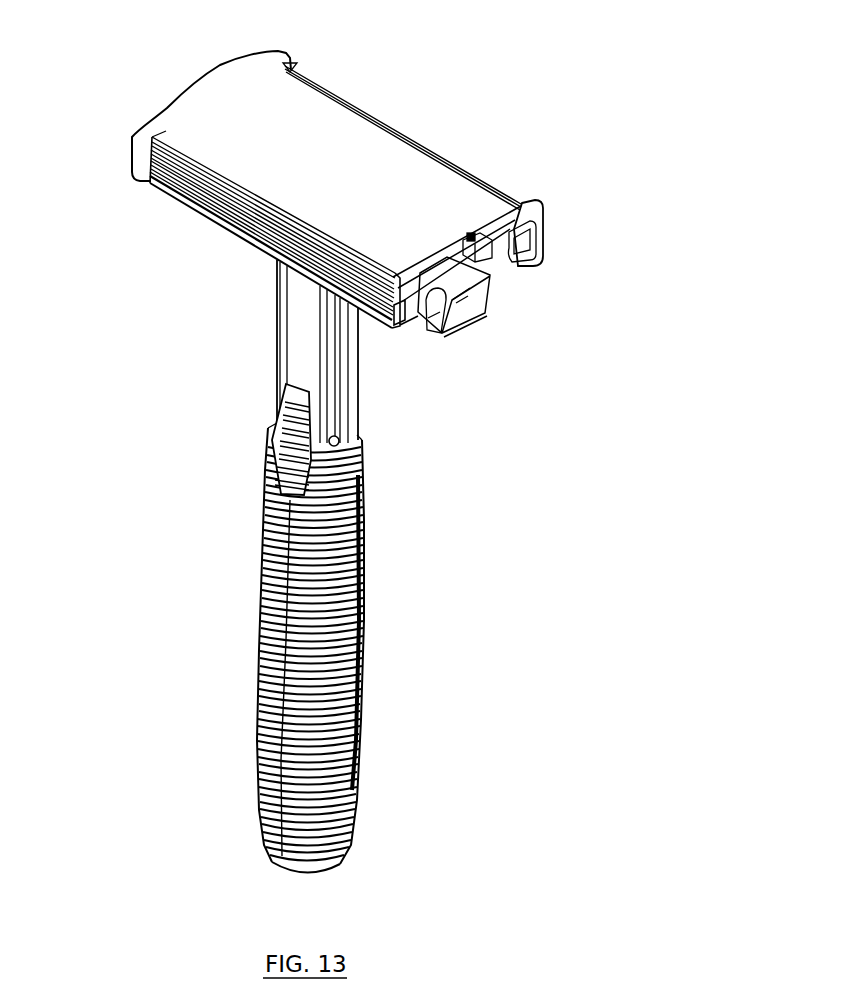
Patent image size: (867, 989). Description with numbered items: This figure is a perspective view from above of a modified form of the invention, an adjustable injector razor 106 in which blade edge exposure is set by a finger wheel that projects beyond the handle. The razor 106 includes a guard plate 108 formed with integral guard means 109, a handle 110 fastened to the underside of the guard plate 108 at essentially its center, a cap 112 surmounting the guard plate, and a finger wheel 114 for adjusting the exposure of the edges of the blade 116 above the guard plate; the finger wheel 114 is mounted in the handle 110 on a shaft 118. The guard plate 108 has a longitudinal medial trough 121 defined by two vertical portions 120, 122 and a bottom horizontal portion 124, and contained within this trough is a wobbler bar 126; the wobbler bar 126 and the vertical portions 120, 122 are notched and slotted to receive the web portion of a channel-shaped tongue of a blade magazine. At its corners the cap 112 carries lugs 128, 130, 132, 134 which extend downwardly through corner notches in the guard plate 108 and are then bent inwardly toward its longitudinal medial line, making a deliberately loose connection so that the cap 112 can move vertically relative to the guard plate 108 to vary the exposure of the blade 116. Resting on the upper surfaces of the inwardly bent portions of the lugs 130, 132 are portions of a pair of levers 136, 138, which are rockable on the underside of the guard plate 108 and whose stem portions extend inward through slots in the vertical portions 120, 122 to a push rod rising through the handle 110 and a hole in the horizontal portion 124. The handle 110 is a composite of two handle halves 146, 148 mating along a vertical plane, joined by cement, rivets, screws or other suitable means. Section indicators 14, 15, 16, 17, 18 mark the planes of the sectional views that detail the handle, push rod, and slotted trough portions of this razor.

The section line 14- 14 is at (112, 130).
The section line 15- 15 is at (318, 170).
The section line 16- 16 is at (339, 129).
The section line 17- 17 is at (305, 875).
The section line 18- 18 is at (305, 930).
The razor 106 is at (234, 539).
The guard plate 108 is at (180, 210).
The guard means 109 is at (195, 205).
The handle 110 is at (399, 598).
The cap 112 is at (460, 103).
The finger wheel 114 is at (268, 441).
The blade 116 is at (238, 203).
The shaft 118 is at (349, 441).
The vertical portion 120 is at (485, 308).
The trough 121 is at (462, 290).
The vertical portion 122 is at (433, 328).
The horizontal portion 124 is at (463, 330).
The wobbler bar 126 is at (470, 240).
The lug 128 is at (291, 53).
The lug 130 is at (545, 207).
The lug 132 is at (392, 333).
The lug 134 is at (130, 176).
The lever 136 is at (515, 266).
The lever 138 is at (437, 292).
The handle half 146 is at (345, 399).
The handle half 148 is at (289, 352).